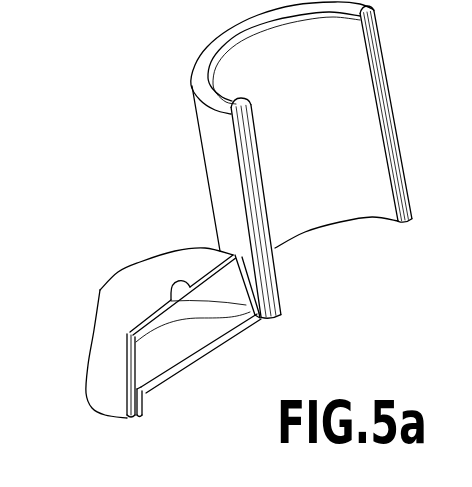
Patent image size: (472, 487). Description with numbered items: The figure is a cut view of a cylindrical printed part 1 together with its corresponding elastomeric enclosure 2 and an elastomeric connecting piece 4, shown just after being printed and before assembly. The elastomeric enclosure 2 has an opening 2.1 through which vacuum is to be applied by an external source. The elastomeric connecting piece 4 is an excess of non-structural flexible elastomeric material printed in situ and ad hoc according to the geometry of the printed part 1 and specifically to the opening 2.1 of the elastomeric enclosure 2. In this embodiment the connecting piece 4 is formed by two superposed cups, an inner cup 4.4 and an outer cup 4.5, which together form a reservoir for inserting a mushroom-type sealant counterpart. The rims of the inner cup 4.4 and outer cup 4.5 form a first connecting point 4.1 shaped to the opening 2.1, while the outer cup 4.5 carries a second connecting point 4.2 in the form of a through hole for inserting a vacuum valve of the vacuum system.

The cylindrical printed part 1 is at (390, 80).
The elastomeric enclosure 2 is at (386, 52).
The opening 2.1 is at (409, 220).
The elastomeric connecting piece 4 is at (110, 254).
The first connecting point 4.1 is at (152, 413).
The second connecting point 4.2 is at (169, 280).
The inner cup 4.4 is at (157, 359).
The outer cup 4.5 is at (100, 337).